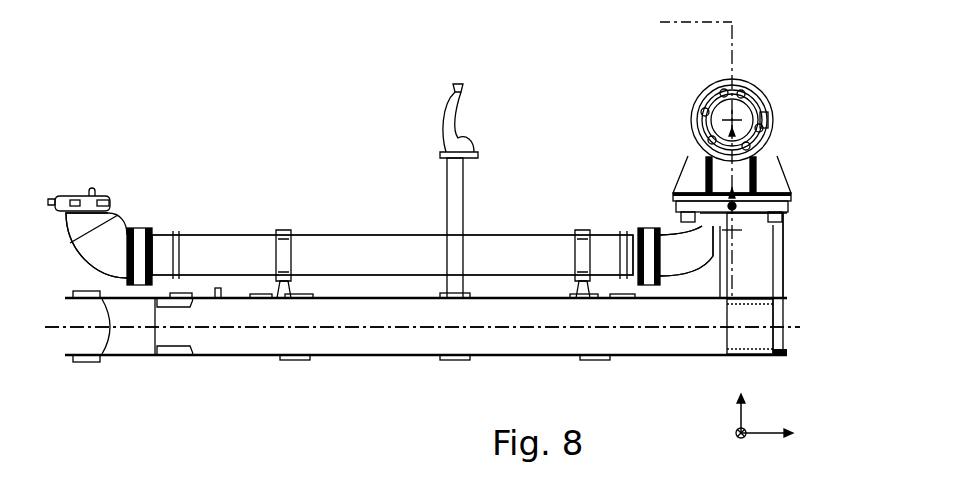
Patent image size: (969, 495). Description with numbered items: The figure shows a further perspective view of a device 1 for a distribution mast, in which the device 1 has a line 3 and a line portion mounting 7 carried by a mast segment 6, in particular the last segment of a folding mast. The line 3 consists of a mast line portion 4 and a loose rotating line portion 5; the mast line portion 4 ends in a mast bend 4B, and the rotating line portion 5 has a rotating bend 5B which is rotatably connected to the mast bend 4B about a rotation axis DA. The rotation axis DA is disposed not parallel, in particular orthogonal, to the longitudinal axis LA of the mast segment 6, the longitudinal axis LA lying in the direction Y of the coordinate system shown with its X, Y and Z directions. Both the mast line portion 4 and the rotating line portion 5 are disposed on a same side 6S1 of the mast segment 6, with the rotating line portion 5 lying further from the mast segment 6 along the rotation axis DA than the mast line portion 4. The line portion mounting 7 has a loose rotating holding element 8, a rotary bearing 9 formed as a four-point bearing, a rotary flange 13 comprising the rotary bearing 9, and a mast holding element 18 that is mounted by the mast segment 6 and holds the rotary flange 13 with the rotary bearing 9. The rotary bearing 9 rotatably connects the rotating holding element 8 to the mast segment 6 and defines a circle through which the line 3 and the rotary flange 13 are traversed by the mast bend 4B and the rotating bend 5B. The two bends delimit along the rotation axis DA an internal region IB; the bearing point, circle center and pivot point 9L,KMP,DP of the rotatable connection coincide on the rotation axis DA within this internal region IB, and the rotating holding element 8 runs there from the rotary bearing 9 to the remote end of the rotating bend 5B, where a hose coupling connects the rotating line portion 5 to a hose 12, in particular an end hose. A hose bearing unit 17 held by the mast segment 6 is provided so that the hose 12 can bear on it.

The device 1 is at (126, 87).
The line 3 is at (195, 234).
The mast line portion 4 is at (256, 234).
The mast bend 4B is at (693, 250).
The rotating line portion 5 is at (760, 130).
The rotating bend 5B is at (718, 133).
The mast segment 6 is at (388, 340).
The same side 6S1 is at (335, 292).
The line portion mounting 7 is at (765, 192).
The rotating holding element 8 is at (712, 160).
The rotary bearing 9 is at (700, 214).
The bearing point, circle center and pivot point 9L,KMP,DP is at (732, 205).
The hose 12 is at (752, 100).
The rotary flange 13 is at (785, 208).
The hose bearing unit 17 is at (445, 124).
The mast holding element 18 is at (780, 313).
The rotation axis DA is at (682, 155).
The internal region IB is at (740, 222).
The longitudinal axis LA is at (243, 330).
The X axis X is at (731, 412).
The direction y Y is at (775, 441).
The Z axis Z is at (732, 448).